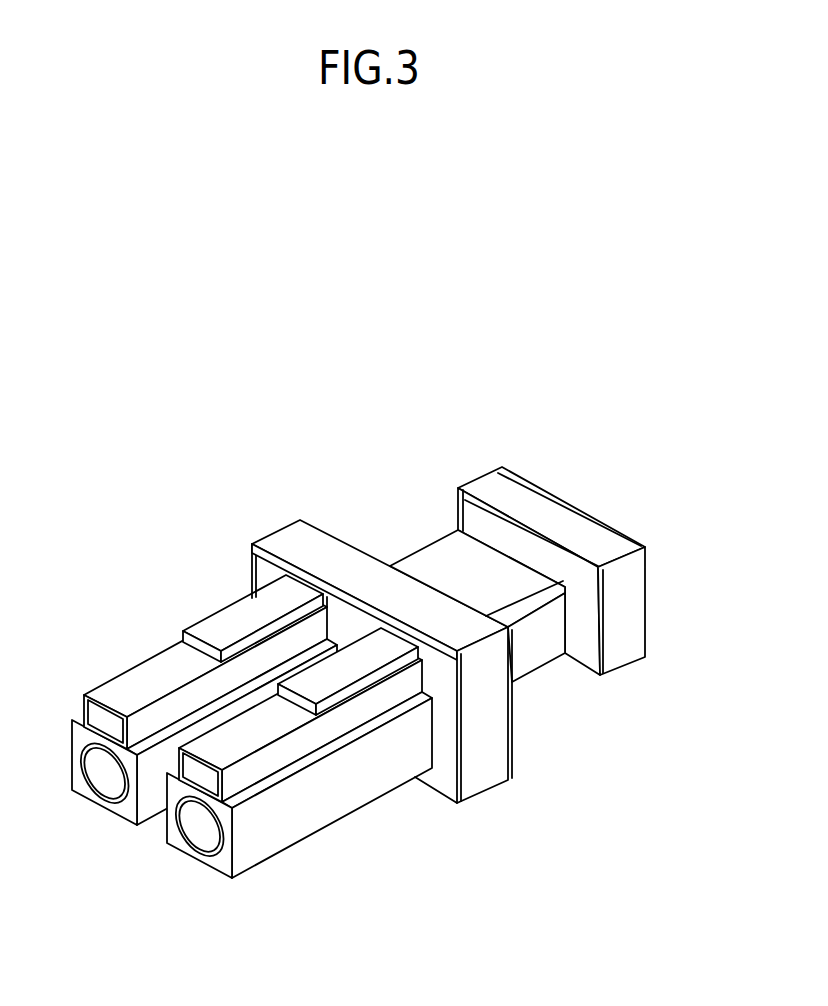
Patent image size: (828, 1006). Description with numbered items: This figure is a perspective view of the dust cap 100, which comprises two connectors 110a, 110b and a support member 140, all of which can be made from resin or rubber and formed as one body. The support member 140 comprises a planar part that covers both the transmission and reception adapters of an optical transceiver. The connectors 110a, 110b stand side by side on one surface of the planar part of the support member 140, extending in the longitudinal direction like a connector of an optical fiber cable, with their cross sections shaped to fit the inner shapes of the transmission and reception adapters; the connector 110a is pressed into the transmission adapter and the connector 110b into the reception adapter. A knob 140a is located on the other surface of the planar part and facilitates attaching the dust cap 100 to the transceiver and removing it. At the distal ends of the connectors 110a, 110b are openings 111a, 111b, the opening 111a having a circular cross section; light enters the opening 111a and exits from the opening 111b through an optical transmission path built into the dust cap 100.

The dust cap 100 is at (636, 403).
The connector 110a is at (201, 727).
The connector 110b is at (296, 778).
The opening 111a is at (103, 785).
The opening 111b is at (198, 833).
The support member 140 is at (448, 670).
The knob 140a is at (430, 560).